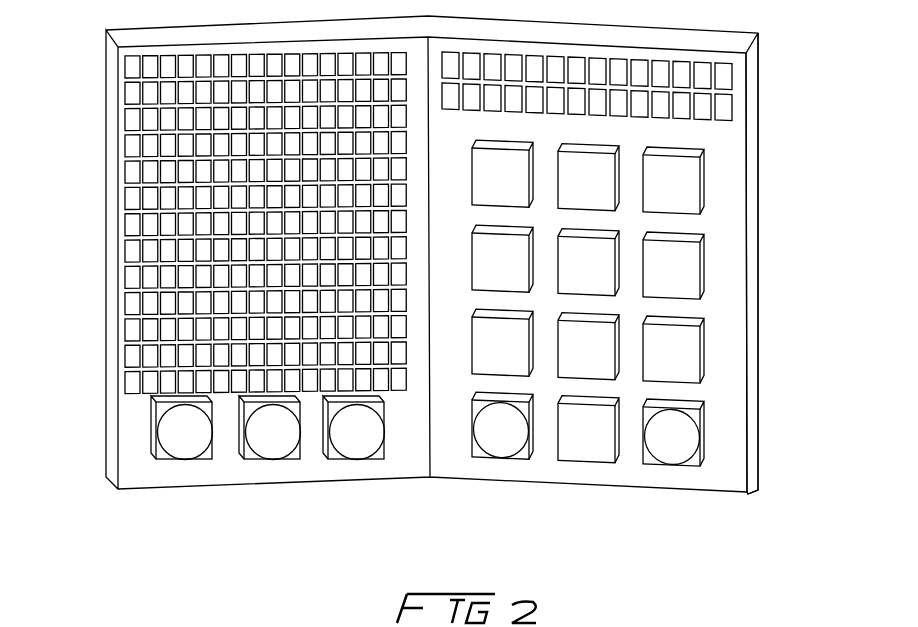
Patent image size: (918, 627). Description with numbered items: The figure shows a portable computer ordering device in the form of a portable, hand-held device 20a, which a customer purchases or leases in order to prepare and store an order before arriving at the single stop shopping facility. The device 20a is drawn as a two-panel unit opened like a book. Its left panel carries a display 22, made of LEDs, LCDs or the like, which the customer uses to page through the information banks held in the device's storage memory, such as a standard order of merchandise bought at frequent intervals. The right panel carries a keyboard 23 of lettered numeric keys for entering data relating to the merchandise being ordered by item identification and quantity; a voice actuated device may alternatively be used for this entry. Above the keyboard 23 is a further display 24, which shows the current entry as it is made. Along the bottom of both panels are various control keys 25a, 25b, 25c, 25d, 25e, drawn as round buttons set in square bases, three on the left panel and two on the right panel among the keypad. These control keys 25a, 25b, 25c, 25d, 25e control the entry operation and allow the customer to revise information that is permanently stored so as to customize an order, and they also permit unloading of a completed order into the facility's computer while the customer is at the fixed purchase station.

The portable hand-held device 20a is at (104, 307).
The display 22 is at (153, 156).
The keyboard 23 is at (737, 312).
The further display 24 is at (683, 72).
The control key 25a is at (170, 442).
The control key 25b is at (258, 442).
The control key 25c is at (342, 442).
The control key 25d is at (487, 438).
The control key 25e is at (657, 445).